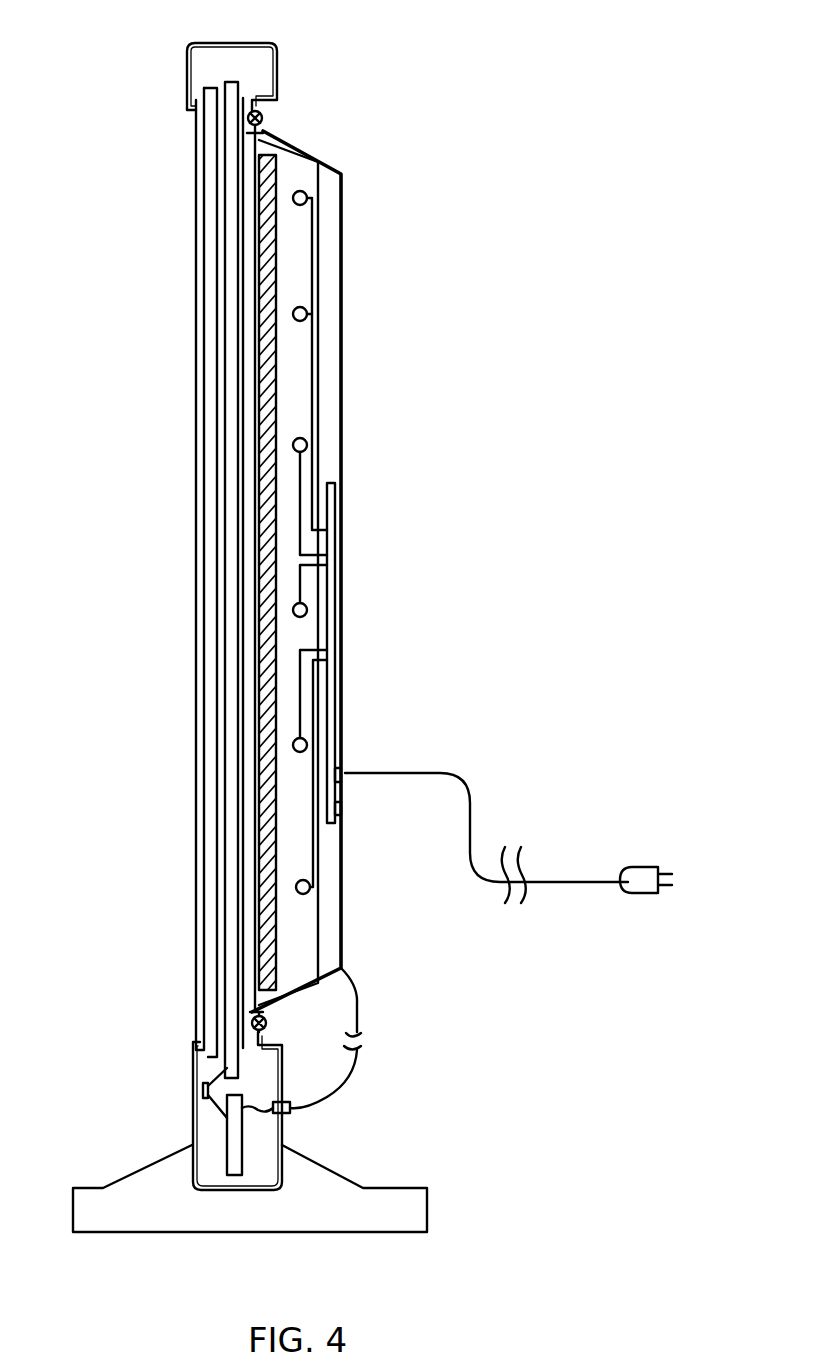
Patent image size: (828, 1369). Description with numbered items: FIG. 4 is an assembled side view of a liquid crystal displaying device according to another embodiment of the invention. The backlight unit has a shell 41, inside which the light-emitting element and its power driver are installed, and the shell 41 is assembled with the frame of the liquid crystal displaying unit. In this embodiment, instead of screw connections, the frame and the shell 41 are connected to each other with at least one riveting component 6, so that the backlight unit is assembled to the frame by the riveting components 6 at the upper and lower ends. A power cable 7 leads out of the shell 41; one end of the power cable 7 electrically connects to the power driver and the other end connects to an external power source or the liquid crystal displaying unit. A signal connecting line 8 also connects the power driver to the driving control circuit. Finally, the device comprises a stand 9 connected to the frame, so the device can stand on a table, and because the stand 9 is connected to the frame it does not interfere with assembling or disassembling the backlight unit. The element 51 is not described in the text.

The top cover 51 is at (258, 42).
The riveting component 6 is at (293, 1025).
The shell 41 is at (345, 242).
The power cable 7 is at (452, 778).
The signal connecting line 8 is at (360, 1002).
The stand 9 is at (323, 1182).